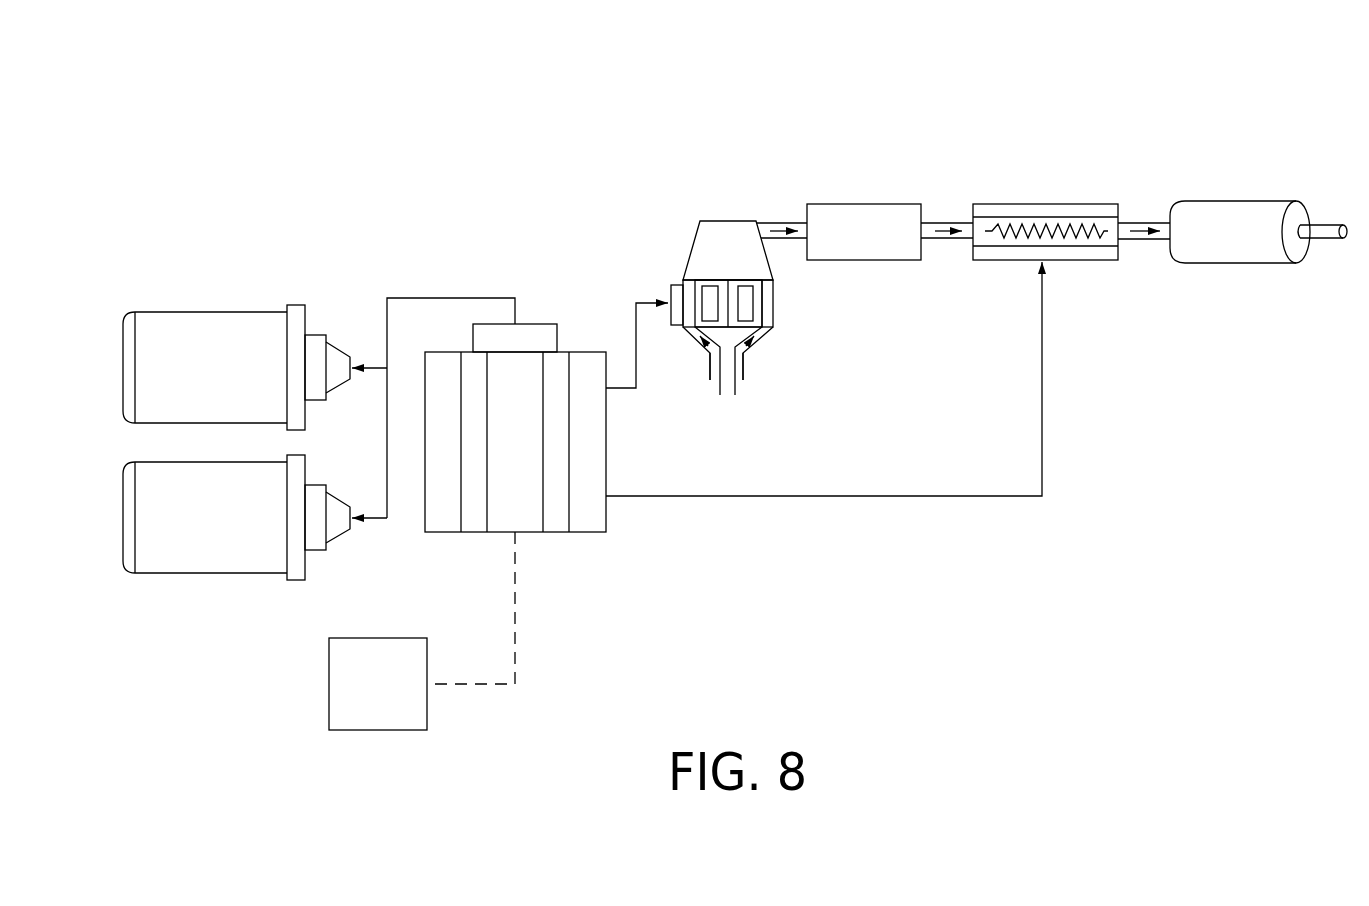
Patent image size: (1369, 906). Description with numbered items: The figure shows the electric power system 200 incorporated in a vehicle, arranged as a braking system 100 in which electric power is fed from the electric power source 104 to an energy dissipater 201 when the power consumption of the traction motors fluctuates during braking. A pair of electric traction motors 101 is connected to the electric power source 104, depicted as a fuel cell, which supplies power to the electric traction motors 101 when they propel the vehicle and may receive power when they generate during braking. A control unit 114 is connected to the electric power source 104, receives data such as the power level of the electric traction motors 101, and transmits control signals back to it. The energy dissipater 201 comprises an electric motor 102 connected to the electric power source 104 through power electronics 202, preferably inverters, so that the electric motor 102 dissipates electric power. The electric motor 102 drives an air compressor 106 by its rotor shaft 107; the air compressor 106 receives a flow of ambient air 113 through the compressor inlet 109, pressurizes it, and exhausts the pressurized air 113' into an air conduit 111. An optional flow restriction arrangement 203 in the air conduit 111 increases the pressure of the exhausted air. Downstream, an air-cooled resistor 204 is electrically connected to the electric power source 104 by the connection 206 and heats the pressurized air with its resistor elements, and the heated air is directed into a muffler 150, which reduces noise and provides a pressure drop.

The system 100 is at (780, 100).
The electric traction motor 101 is at (205, 312).
The electric motor 102 is at (728, 307).
The electric power source 104 is at (590, 532).
The air compressor 106 is at (722, 220).
The rotor shaft 107 is at (764, 327).
The compressor inlet 109 is at (773, 290).
The air conduit 111 is at (783, 222).
The flow of ambient air 113 is at (775, 361).
The pressurized air 113' is at (967, 281).
The control unit 114 is at (329, 685).
The muffler 150 is at (1238, 200).
The electric power system 200 is at (593, 221).
The energy dissipater 201 is at (685, 222).
The power electronics 202 is at (672, 292).
The flow restriction arrangement 203 is at (856, 204).
The air-cooled resistor 204 is at (1033, 204).
The control line 206 is at (1043, 388).